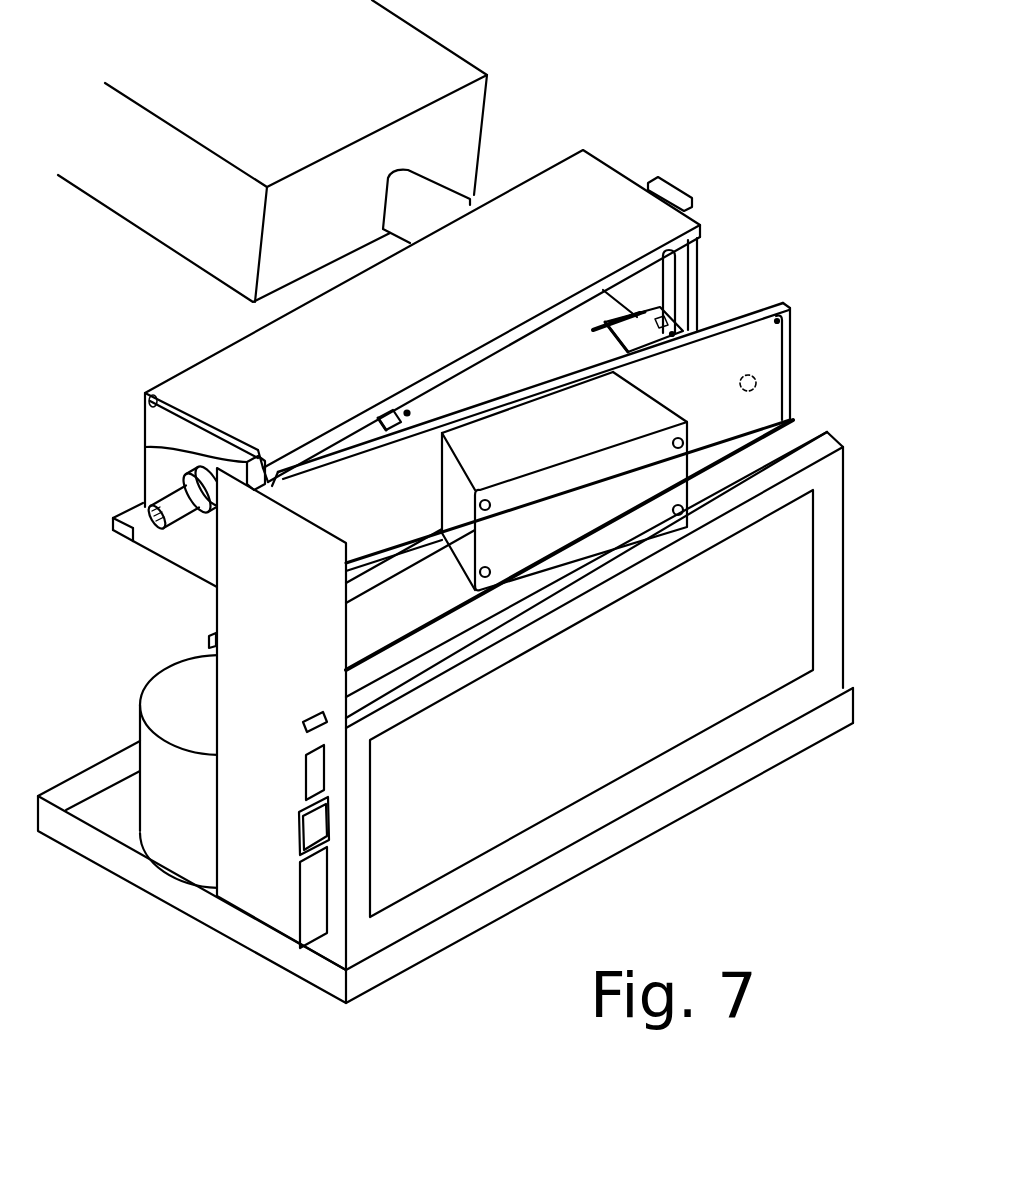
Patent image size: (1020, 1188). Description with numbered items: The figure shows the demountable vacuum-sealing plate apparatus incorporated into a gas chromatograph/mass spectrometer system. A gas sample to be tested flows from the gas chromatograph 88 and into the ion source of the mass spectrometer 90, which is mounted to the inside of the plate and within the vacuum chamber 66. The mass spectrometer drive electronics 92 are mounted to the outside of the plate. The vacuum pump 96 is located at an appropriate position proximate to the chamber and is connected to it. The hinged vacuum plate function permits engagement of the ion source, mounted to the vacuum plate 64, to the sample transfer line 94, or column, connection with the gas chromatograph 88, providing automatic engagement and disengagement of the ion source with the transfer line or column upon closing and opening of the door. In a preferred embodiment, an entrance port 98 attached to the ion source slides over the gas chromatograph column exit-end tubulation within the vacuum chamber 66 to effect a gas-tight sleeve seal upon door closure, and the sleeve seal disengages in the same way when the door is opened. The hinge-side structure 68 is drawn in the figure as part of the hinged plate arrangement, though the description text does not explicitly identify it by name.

The vacuum plate 64 is at (757, 367).
The vacuum chamber 66 is at (590, 183).
The hinge flange 68 is at (150, 447).
The gas chromatograph 88 is at (205, 227).
The mass spectrometer 90 is at (668, 331).
The mass spectrometer drive electronics 92 is at (608, 527).
The sample transfer line 94 is at (447, 212).
The vacuum pump 96 is at (182, 805).
The entrance port 98 is at (600, 322).